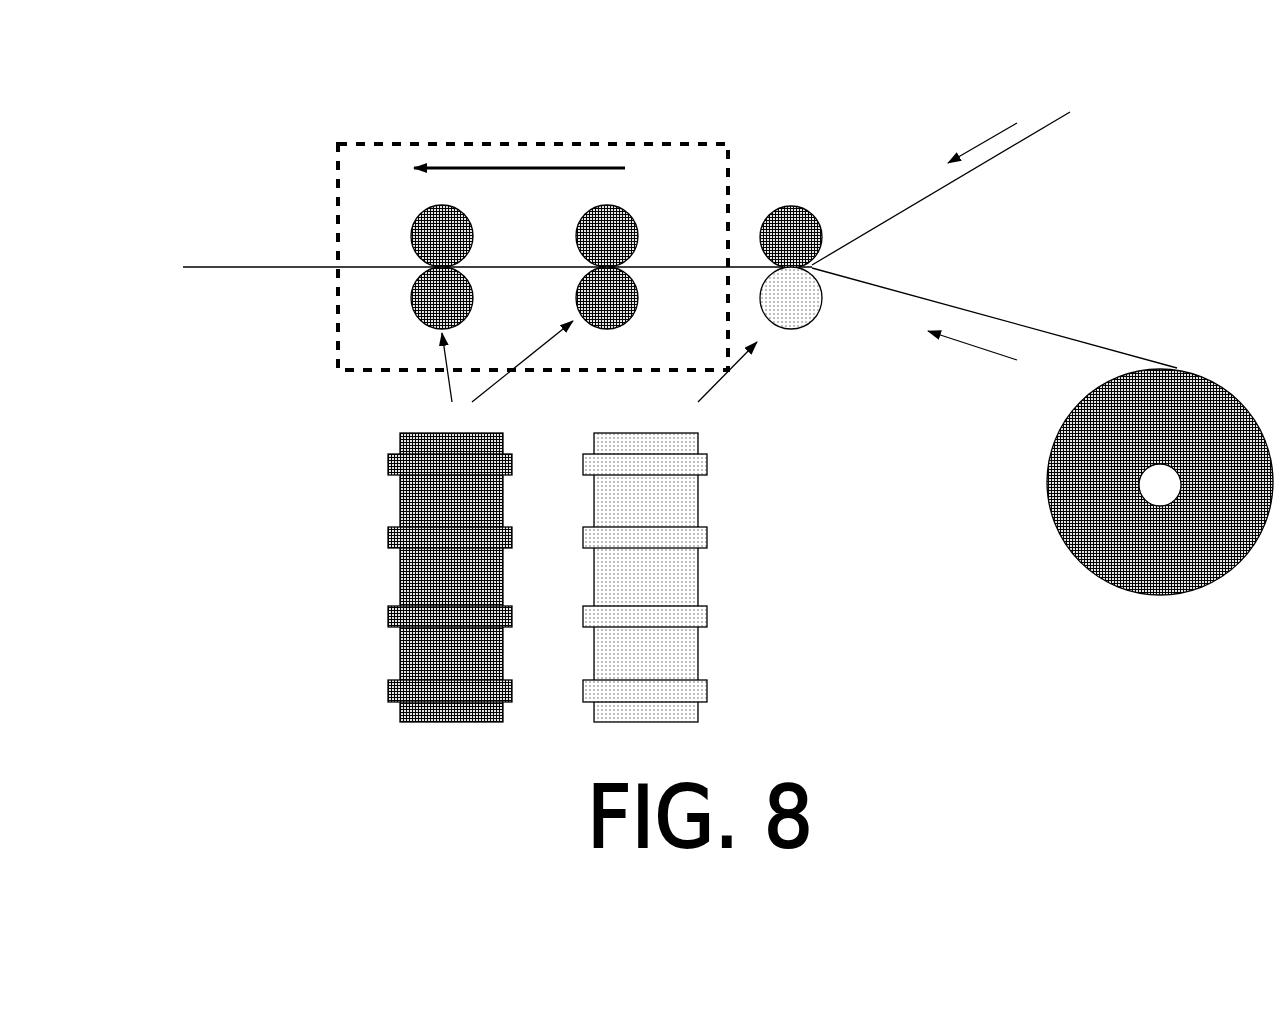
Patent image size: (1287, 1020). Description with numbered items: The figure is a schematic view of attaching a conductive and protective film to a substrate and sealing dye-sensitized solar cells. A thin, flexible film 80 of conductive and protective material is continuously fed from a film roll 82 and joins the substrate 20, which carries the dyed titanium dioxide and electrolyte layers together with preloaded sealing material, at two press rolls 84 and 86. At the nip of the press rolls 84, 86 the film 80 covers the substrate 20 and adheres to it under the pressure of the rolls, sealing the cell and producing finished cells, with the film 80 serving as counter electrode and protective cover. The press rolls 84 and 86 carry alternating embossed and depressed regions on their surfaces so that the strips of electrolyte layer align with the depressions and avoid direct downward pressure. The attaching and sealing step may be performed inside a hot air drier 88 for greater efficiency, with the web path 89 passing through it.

The substrate 20 is at (914, 205).
The film 80 is at (1070, 338).
The film roll 82 is at (1098, 484).
The press roll 84 is at (695, 574).
The press roll 86 is at (373, 577).
The hot air drier 88 is at (318, 145).
The web path 89 is at (240, 267).